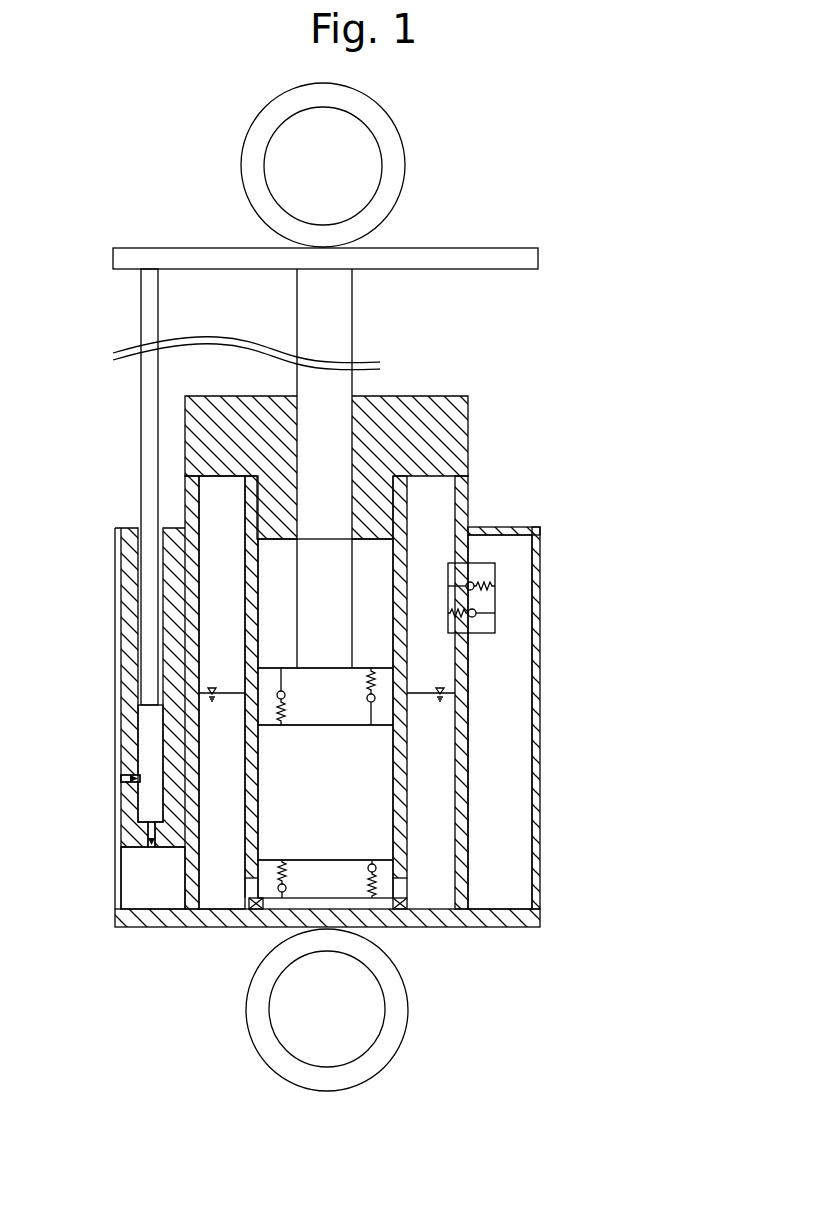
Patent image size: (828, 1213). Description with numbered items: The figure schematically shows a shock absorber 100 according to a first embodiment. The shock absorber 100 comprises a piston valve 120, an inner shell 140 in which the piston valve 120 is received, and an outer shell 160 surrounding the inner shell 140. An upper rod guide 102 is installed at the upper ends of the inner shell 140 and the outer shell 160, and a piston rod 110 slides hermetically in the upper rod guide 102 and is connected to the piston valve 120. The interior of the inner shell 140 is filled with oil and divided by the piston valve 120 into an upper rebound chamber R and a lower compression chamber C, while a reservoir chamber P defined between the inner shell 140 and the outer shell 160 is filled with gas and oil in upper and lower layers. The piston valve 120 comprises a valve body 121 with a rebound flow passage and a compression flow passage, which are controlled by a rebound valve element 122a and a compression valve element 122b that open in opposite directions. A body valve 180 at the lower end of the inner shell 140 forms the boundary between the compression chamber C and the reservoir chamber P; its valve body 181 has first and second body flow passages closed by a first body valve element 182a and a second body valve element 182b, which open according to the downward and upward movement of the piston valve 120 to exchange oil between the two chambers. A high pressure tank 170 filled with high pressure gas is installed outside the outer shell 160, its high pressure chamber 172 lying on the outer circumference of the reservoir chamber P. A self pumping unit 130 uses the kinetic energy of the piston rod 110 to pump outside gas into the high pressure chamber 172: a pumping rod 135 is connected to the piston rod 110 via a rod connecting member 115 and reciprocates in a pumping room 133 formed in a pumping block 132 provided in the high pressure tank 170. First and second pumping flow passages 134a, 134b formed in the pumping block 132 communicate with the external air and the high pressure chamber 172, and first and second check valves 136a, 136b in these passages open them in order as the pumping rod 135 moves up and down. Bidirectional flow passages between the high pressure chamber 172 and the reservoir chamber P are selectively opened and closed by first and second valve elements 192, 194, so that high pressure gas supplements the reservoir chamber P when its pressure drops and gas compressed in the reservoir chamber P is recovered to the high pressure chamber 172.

The shock absorber 100 is at (629, 178).
The rod connecting member 115 is at (455, 255).
The piston rod 110 is at (353, 317).
The upper rod guide 102 is at (468, 430).
The inner shell 140 is at (387, 478).
The outer shell 160 is at (462, 680).
The piston valve 120 is at (266, 731).
The reservoir chamber P is at (222, 498).
The rebound chamber R is at (380, 560).
The compression chamber C is at (381, 816).
The valve body 121 is at (327, 715).
The rebound valve element 122a is at (287, 700).
The compression valve element 122b is at (370, 720).
The valve body 181 is at (328, 867).
The first body valve element 182a is at (380, 873).
The second body valve element 182b is at (259, 908).
The body valve 180 is at (370, 912).
The high pressure tank 170 is at (538, 737).
The high pressure chamber 172 is at (509, 788).
The second valve element 194 is at (495, 586).
The first valve element 192 is at (495, 613).
The pumping block 132 is at (130, 663).
The pumping rod 135 is at (147, 613).
The pumping room 133 is at (150, 727).
The first pumping flow passage 134a is at (120, 778).
The first check valve 136a is at (130, 786).
The second pumping flow passage 134b is at (144, 848).
The second check valve 136b is at (148, 845).
The self pumping unit 130 is at (168, 862).